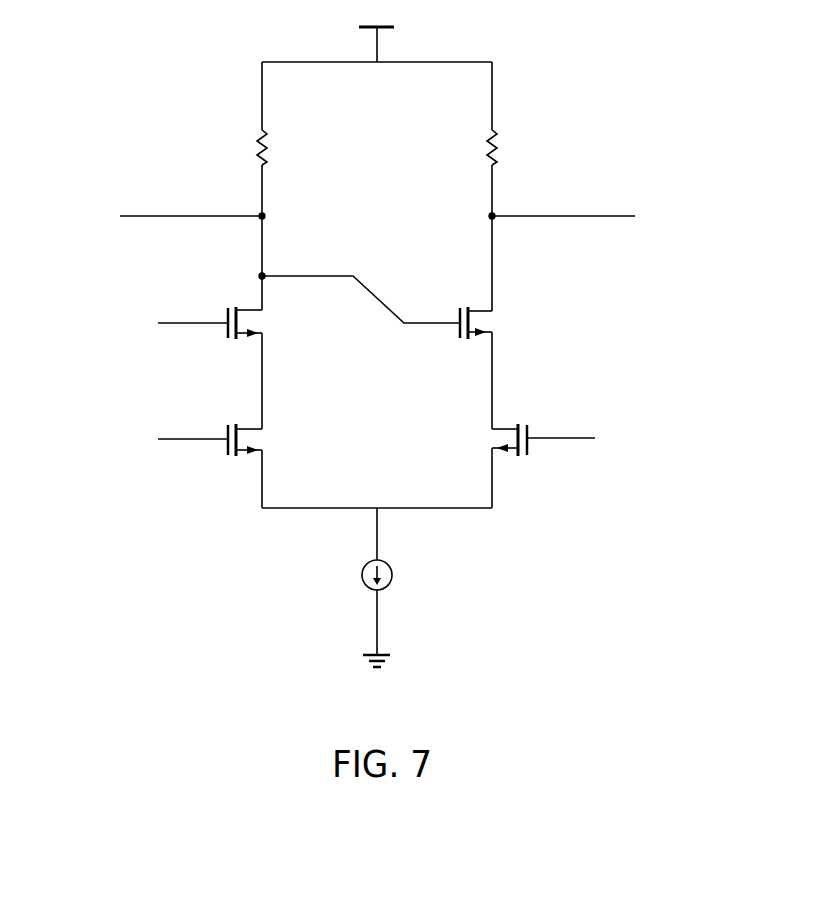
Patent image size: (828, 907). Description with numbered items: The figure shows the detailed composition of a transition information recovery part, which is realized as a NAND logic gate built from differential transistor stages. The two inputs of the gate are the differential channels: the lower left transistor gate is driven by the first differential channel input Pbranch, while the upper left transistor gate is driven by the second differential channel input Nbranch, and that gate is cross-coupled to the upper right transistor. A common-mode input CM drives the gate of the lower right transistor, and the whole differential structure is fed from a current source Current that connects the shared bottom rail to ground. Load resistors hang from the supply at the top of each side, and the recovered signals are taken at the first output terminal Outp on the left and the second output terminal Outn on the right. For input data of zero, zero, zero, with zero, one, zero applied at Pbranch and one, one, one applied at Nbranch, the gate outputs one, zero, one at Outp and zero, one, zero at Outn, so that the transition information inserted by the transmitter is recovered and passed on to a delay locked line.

The first output terminal Outp is at (159, 216).
The second output terminal Outn is at (592, 216).
The N branch of the differential channels Nbranch is at (152, 323).
The P branch of the differential channels Pbranch is at (152, 440).
The common-mode transistor CM is at (566, 440).
The current source Current is at (422, 581).